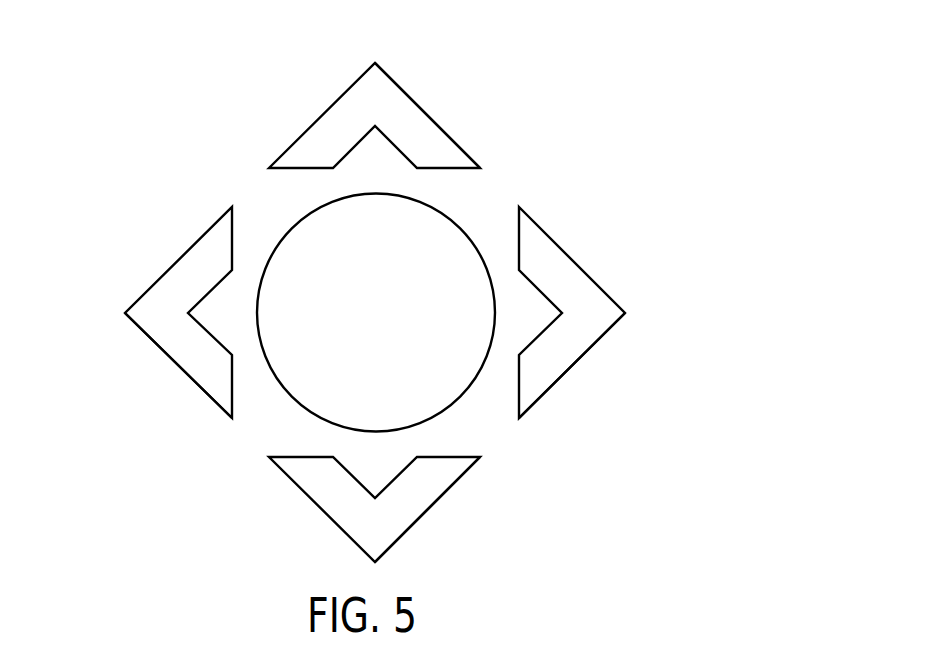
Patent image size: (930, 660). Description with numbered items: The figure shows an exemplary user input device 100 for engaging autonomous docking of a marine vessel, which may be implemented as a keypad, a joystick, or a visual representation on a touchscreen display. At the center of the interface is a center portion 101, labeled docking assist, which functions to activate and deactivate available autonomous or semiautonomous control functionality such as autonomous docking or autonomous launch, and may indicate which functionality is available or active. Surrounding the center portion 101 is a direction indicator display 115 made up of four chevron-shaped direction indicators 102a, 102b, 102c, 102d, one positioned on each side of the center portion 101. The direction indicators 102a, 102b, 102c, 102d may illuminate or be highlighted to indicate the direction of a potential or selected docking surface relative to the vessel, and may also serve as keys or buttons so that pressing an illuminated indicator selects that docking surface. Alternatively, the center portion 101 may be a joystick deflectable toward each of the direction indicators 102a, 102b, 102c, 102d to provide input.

The user input device 100 is at (598, 103).
The center portion 101 is at (458, 226).
The direction indicator 102a is at (428, 115).
The direction indicator 102b is at (572, 255).
The direction indicator 102c is at (428, 510).
The direction indicator 102d is at (178, 258).
The direction indicator display 115 is at (457, 138).